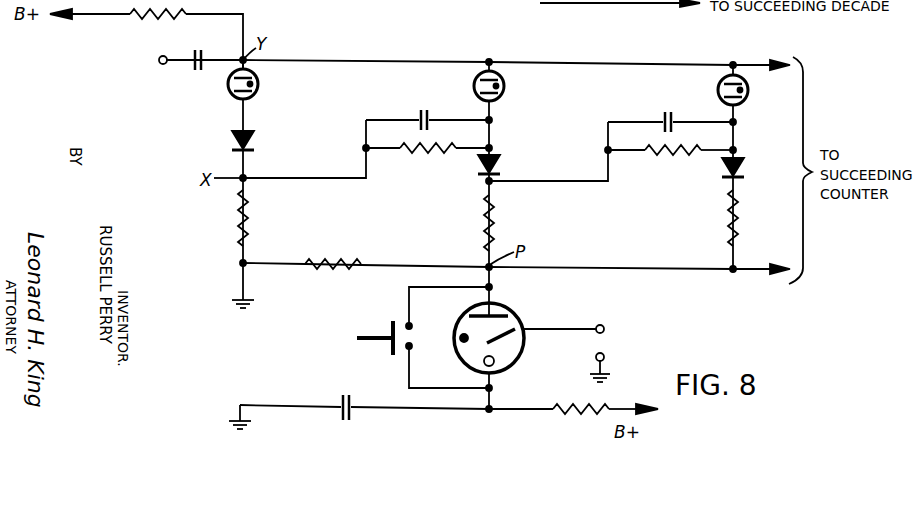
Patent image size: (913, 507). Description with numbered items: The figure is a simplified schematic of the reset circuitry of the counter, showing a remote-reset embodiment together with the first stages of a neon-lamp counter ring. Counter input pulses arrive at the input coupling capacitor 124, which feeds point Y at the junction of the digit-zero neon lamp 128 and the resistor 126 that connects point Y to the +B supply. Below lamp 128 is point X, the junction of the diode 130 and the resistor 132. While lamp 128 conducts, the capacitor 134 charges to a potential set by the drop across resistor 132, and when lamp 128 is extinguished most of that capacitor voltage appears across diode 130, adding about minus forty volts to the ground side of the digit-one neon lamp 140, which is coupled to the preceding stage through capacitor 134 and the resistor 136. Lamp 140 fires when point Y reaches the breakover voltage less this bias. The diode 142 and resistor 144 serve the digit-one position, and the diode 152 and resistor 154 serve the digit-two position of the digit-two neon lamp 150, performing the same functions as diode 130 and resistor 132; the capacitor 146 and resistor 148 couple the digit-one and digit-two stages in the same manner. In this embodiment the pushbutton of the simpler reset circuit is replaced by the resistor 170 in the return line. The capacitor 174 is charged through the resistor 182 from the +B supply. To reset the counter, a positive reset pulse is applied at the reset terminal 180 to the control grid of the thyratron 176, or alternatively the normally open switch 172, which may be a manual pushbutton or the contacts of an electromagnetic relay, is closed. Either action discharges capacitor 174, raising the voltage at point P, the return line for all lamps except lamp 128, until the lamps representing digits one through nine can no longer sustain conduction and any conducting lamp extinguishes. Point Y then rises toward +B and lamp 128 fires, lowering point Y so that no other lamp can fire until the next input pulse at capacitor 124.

The input coupling capacitor 124 is at (190, 66).
The resistor 126 is at (142, 22).
The digit 0 neon lamp 128 is at (258, 92).
The diode 130 is at (250, 138).
The resistor 132 is at (250, 226).
The capacitor 134 is at (418, 112).
The resistor 136 is at (428, 154).
The digit 1 neon lamp 140 is at (504, 100).
The diode 142 is at (498, 167).
The resistor 144 is at (497, 234).
The capacitor 146 is at (662, 116).
The resistor 148 is at (680, 158).
The digit 2 neon lamp 150 is at (718, 92).
The diode 152 is at (724, 170).
The resistor 154 is at (728, 234).
The resistor 170 is at (345, 256).
The normally open switch 172 is at (390, 325).
The capacitor 174 is at (340, 398).
The thyratron 176 is at (527, 308).
The reset terminal 180 is at (600, 325).
The resistor 182 is at (566, 406).